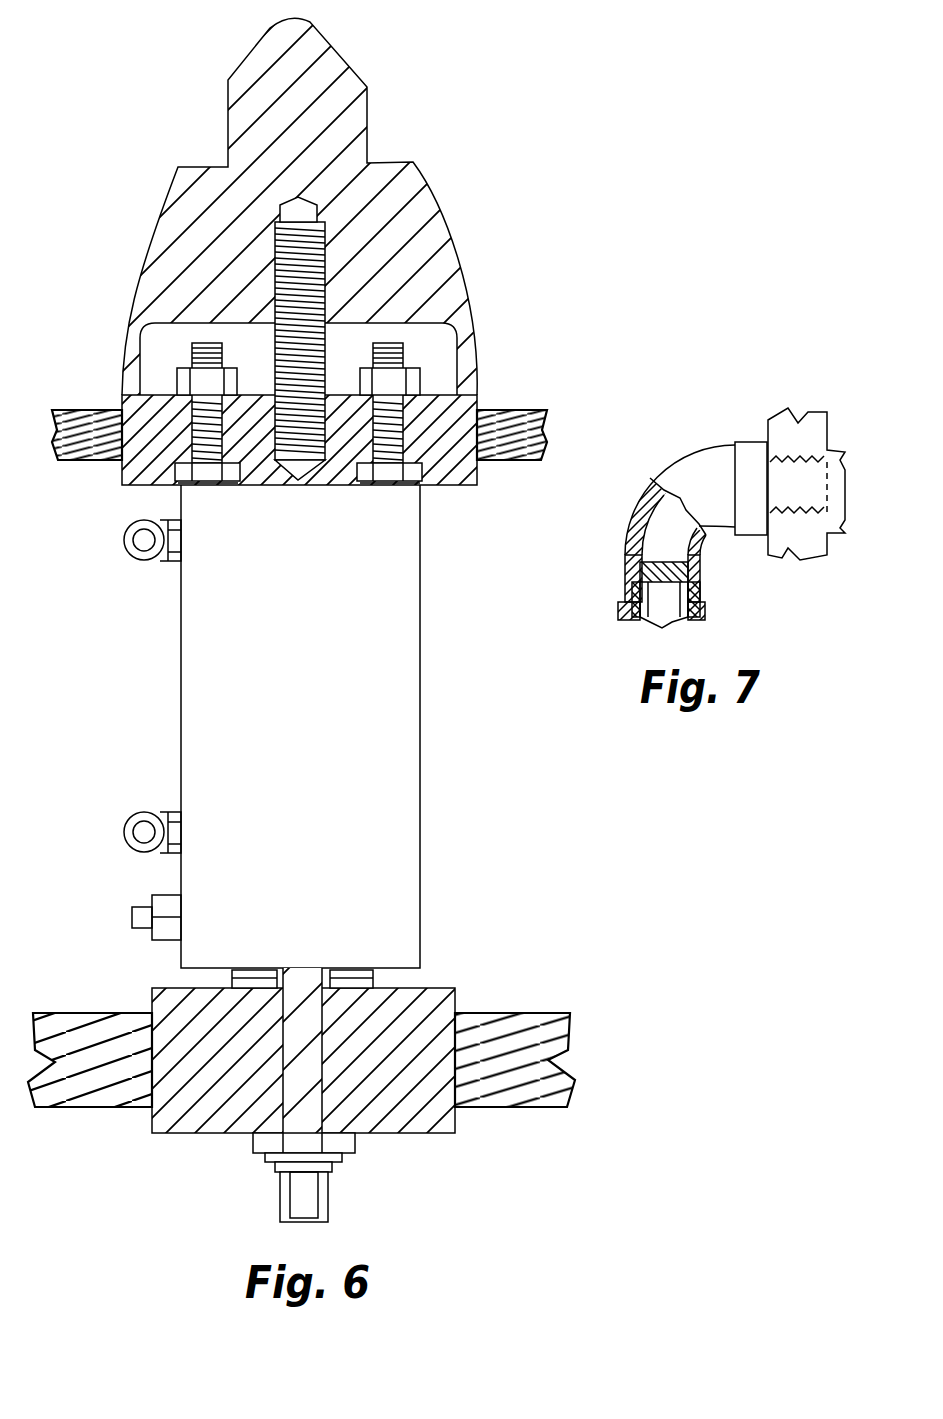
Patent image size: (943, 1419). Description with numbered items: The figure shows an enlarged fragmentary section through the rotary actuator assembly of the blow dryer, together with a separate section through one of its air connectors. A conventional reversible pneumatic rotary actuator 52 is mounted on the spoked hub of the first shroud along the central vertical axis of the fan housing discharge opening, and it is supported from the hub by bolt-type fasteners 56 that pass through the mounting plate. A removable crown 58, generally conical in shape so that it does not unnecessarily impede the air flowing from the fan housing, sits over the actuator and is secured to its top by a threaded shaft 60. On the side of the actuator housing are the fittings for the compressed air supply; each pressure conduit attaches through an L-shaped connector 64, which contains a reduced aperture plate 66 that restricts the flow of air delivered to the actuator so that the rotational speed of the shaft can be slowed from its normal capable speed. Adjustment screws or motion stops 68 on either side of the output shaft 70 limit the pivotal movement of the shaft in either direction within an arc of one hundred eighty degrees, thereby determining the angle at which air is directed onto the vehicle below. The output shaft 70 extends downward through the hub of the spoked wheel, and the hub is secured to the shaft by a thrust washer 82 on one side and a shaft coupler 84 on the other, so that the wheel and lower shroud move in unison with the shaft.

In FIG. 6, the rotary actuator 52 is at (452, 692).
In FIG. 6, the bolt-type fasteners 56 is at (192, 352).
In FIG. 6, the removable crown 58 is at (423, 179).
In FIG. 6, the threaded shaft 60 is at (325, 262).
In FIG. 6, the L-shaped connector 64 is at (123, 547).
In FIG. 7, the L-shaped connector 64 is at (700, 463).
In FIG. 7, the reduced aperture plate 66 is at (660, 635).
In FIG. 6, the adjustment screws or motion stops 68 is at (132, 915).
In FIG. 6, the output shaft 70 is at (300, 1005).
In FIG. 6, the thrust washer 82 is at (227, 982).
In FIG. 6, the shaft coupler 84 is at (325, 1195).